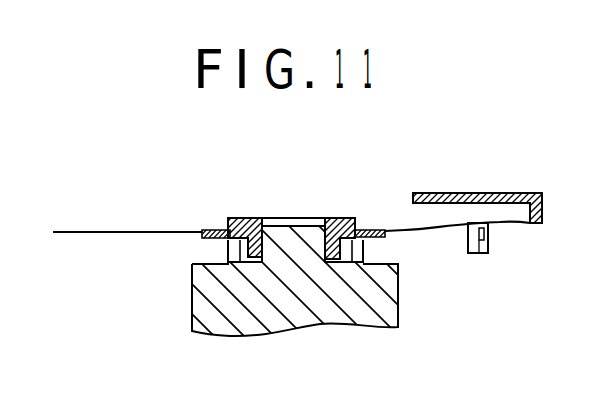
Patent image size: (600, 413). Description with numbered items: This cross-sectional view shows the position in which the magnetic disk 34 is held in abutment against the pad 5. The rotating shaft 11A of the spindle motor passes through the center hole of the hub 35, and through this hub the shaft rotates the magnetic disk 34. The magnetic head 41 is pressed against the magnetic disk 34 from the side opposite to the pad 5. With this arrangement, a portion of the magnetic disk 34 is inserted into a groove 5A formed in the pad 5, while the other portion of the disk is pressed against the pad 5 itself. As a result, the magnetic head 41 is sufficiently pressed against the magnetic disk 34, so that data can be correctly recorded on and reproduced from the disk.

The magnetic disk 34 is at (139, 233).
The rotating shaft 11A is at (285, 230).
The hub 35 is at (355, 218).
The pad 5 is at (478, 193).
The groove 5A is at (438, 212).
The magnetic head 41 is at (488, 242).